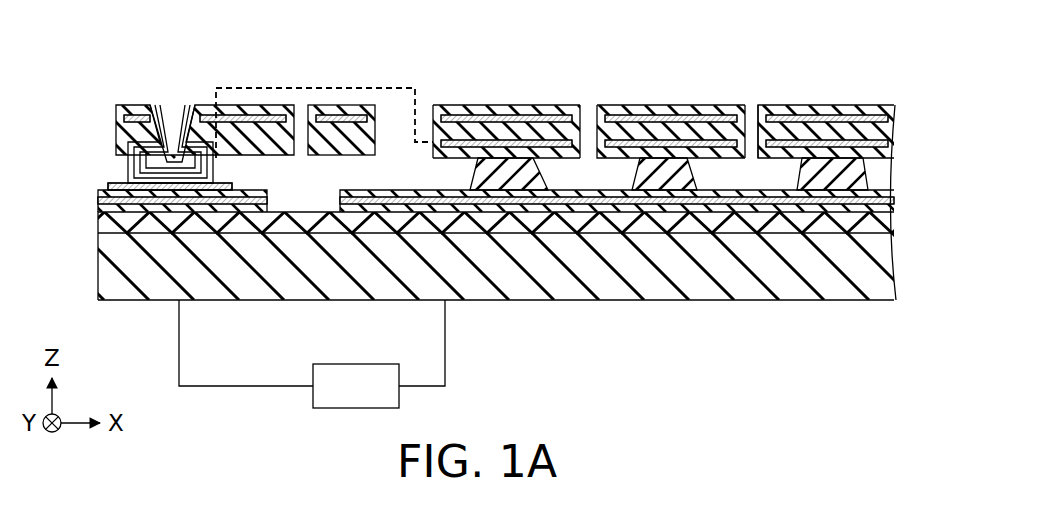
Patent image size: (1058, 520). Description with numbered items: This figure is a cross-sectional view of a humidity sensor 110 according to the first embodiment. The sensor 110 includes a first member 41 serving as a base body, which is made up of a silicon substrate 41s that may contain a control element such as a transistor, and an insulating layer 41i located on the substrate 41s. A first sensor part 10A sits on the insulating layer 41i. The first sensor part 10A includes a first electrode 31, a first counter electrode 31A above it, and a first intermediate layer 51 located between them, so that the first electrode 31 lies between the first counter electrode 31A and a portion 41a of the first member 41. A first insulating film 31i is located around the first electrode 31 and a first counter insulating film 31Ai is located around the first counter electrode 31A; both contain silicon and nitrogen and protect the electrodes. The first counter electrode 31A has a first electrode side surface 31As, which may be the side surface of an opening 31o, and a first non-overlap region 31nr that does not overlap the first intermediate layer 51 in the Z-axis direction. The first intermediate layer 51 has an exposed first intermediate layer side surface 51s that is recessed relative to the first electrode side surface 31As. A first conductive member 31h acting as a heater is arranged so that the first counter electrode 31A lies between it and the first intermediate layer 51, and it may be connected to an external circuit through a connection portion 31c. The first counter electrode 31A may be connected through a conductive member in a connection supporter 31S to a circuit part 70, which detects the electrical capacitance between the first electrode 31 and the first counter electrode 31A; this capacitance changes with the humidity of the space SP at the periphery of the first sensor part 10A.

The sensor 110 is at (498, 206).
The first sensor part 10A is at (802, 92).
The space SP is at (671, 82).
The opening 31o is at (752, 106).
The first counter insulating film 31Ai is at (652, 107).
The first electrode side surface 31As is at (577, 142).
The first non-overlap region 31nr is at (550, 146).
The first counter electrode 31A is at (517, 93).
The first conductive member 31h is at (465, 114).
The connection portion 31c is at (352, 120).
The connection supporter 31S is at (196, 108).
The first electrode 31 is at (735, 205).
The first insulating film 31i is at (753, 193).
The first member 41 is at (498, 309).
The insulating layer 41i is at (242, 223).
The substrate 41s is at (285, 265).
The portion of the first member 41a is at (688, 222).
The first intermediate layer 51 is at (666, 256).
The first intermediate layer side surface 51s is at (547, 180).
The circuit part 70 is at (313, 398).